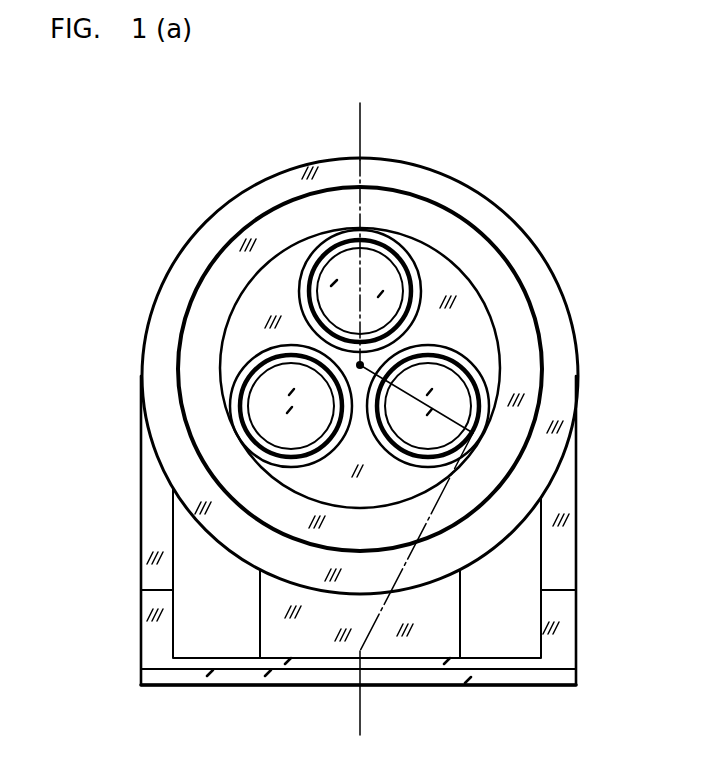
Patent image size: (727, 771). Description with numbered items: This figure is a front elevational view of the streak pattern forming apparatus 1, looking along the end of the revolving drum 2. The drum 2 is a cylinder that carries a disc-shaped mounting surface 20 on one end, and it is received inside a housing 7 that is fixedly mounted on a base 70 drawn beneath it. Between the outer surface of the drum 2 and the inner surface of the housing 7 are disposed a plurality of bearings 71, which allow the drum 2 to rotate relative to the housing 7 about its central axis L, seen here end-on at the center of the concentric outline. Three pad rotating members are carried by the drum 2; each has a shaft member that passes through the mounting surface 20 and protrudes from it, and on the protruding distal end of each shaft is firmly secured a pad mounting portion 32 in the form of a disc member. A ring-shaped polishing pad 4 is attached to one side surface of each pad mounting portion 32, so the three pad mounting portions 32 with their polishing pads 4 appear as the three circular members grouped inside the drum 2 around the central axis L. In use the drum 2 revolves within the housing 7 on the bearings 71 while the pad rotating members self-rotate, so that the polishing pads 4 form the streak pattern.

The streak pattern forming apparatus 1 is at (360, 106).
The drum 2 is at (420, 237).
The polishing pad 4 is at (412, 288).
The housing 7 is at (492, 202).
The mounting surface 20 is at (360, 365).
The pad mounting portion 32 is at (378, 310).
The base 70 is at (233, 678).
The bearings 71 is at (483, 262).
The central axis L is at (243, 320).